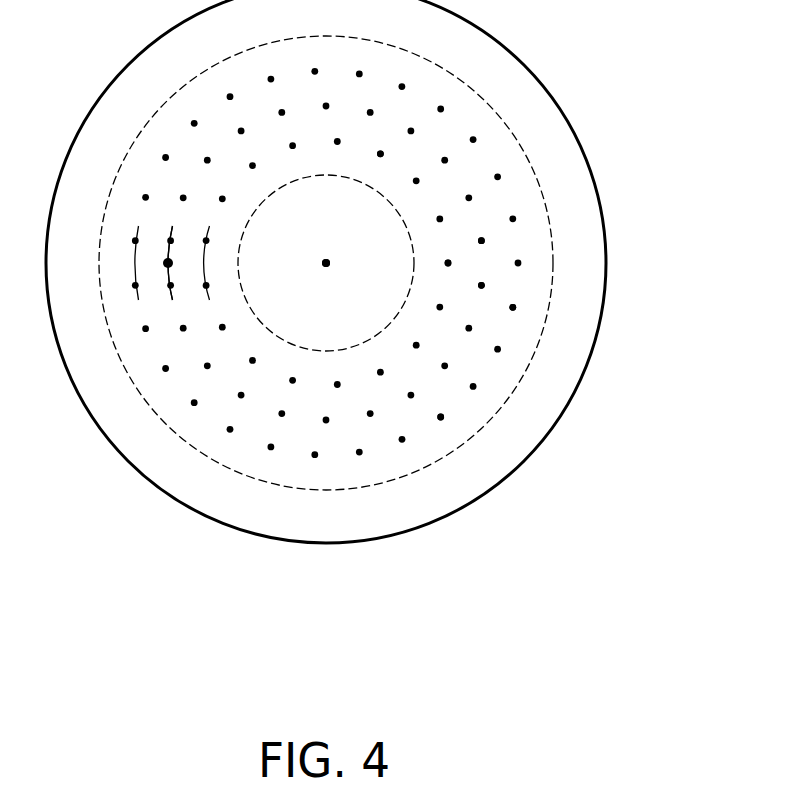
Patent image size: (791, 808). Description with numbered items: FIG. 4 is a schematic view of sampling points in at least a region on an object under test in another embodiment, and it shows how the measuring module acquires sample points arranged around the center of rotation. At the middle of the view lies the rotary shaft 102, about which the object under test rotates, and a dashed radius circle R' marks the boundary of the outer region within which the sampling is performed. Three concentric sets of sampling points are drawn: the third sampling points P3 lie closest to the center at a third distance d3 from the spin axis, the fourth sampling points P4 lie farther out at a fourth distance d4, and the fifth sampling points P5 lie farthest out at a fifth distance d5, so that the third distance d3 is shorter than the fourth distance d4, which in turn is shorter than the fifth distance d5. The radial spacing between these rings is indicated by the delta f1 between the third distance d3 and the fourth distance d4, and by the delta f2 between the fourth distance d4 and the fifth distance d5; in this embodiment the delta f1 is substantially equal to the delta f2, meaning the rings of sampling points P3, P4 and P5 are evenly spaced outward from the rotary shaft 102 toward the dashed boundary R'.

The dashed radius circle / outer region boundary R' is at (368, 263).
The rotary shaft 102 is at (326, 263).
The third distance d3 is at (372, 170).
The fourth distance d4 is at (465, 243).
The fifth distance d5 is at (430, 402).
The third sampling points P3 is at (448, 263).
The fourth sampling points P4 is at (482, 285).
The fifth sampling points P5 is at (514, 308).
The delta between the third distance and the fourth distance f1 is at (248, 263).
The delta between the fourth distance and the fifth distance f2 is at (88, 263).